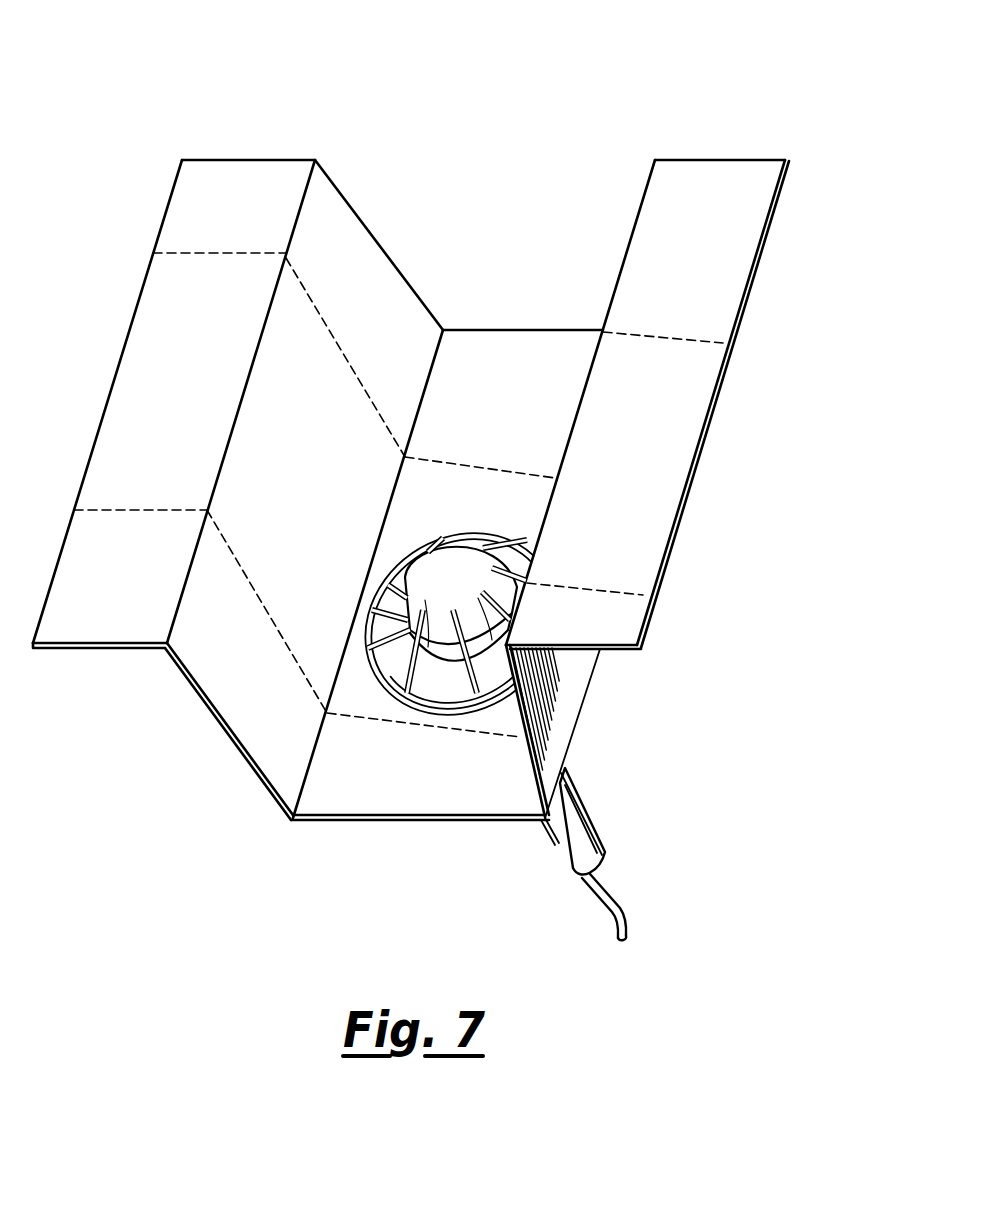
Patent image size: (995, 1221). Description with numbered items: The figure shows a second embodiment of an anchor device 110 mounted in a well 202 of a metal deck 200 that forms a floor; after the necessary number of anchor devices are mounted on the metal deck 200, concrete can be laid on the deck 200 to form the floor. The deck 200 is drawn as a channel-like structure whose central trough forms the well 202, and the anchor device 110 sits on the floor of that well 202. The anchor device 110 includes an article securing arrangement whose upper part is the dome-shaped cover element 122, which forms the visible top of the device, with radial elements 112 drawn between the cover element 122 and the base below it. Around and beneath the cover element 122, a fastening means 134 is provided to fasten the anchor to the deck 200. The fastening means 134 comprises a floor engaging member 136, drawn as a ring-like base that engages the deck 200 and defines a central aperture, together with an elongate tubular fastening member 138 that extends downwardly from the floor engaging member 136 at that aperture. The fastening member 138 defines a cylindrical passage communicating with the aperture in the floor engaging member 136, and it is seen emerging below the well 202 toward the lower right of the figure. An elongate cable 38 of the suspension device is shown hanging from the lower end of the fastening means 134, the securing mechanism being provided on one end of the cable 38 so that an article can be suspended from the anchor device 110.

The metal deck 200 is at (411, 428).
The well 202 is at (340, 258).
The anchor device 110 is at (491, 456).
The cover element 122 is at (432, 540).
The radial fins 112 is at (408, 600).
The floor engaging member 136 is at (461, 624).
The fastening means 134 is at (645, 780).
The elongate tubular fastening member 138 is at (578, 780).
The cable 38 is at (627, 920).